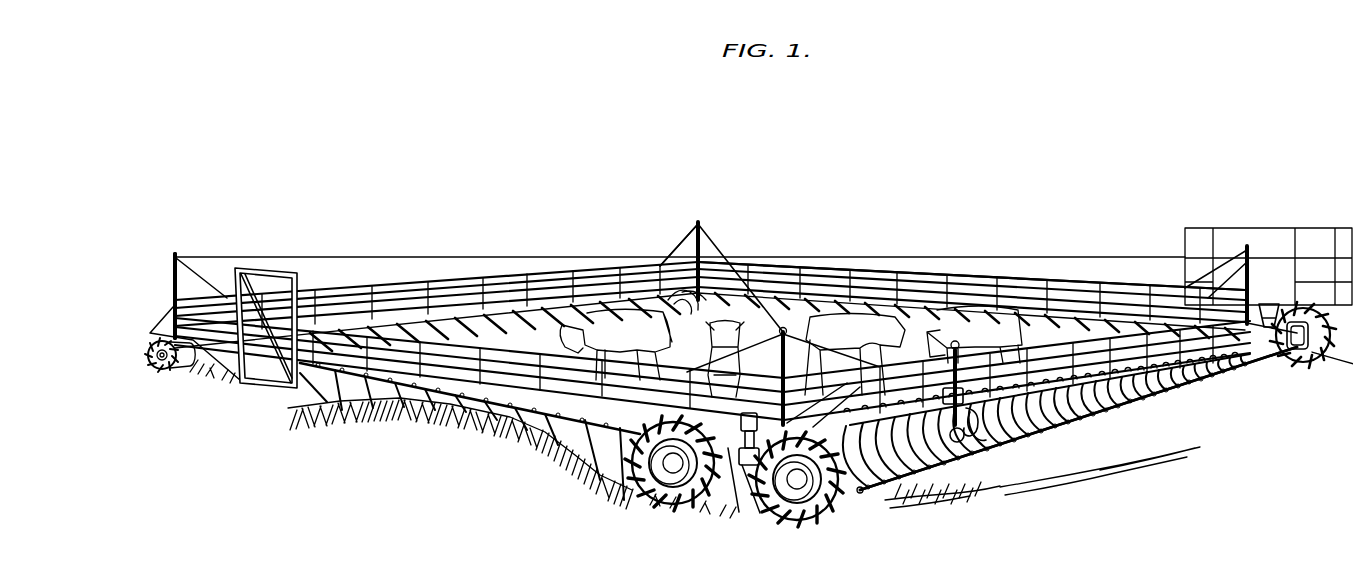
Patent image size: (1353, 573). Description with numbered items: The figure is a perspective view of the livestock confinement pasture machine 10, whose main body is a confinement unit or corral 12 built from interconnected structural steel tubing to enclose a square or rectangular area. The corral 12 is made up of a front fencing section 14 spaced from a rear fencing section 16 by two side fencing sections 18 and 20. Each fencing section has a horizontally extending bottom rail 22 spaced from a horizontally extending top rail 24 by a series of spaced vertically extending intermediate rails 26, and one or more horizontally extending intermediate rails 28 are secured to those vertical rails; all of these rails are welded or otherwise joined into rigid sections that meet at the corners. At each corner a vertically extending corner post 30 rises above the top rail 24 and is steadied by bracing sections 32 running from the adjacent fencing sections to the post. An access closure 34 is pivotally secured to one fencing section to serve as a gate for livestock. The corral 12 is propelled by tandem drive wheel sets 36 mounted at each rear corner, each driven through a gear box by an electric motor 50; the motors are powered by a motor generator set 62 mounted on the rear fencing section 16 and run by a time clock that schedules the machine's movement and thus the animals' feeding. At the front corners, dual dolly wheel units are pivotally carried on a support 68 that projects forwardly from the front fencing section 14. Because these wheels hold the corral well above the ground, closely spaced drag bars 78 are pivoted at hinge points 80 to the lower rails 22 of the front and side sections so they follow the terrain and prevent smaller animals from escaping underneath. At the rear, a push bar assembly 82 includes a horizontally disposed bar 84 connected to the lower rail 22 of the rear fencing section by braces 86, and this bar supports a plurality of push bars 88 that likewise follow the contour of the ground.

The livestock confinement pasture machine 10 is at (1181, 413).
The confinement unit or corral 12 is at (962, 290).
The front fencing section 14 is at (497, 276).
The rear fencing section 16 is at (1100, 323).
The side fencing section 18 is at (915, 279).
The side fencing section 20 is at (493, 371).
The bottom rail 22 is at (360, 374).
The top rail 24 is at (387, 338).
The vertically extending intermediate rails 26 is at (440, 410).
The horizontally extending intermediate rails 28 is at (530, 438).
The corner post 30 is at (178, 257).
The bracing sections 32 is at (683, 255).
The access closure 34 is at (268, 382).
The tandem drive wheel set 36 is at (747, 522).
The electric motor 50 is at (740, 440).
The motor generator set 62 is at (973, 437).
The support 68 is at (170, 302).
The drag bars 78 is at (604, 474).
The hinge points 80 is at (625, 490).
The push bar assembly 82 is at (1207, 382).
The horizontally disposed bar 84 is at (1142, 406).
The braces 86 is at (946, 440).
The push bars 88 is at (1012, 432).